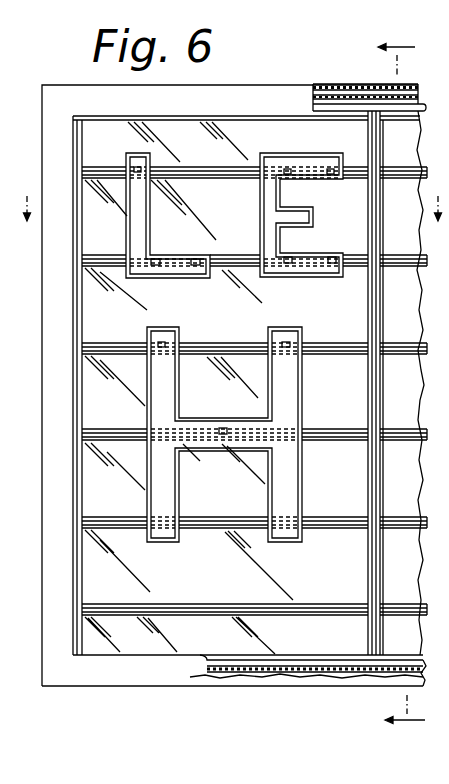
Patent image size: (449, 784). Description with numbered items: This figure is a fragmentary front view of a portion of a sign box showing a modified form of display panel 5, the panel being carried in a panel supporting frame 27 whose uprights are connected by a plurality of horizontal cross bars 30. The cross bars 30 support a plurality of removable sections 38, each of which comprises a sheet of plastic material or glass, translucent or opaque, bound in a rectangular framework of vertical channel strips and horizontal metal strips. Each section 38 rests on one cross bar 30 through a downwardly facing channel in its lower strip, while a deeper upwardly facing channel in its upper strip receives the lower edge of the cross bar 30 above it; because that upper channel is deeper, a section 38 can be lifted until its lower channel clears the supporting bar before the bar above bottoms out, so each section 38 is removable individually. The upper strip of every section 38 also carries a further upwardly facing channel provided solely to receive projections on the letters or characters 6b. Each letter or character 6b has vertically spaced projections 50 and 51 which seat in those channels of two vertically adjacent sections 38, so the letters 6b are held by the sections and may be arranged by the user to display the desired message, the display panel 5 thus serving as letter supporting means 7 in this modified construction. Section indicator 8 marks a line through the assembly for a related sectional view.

The display panel 5 is at (273, 131).
The panel supporting frame 27 is at (368, 133).
The cross bar 30 is at (424, 378).
The removable section 38 is at (90, 380).
The letter or character 6b is at (150, 232).
The projection 50 is at (288, 174).
The projection 51 is at (288, 256).
The letter supporting means 7 is at (401, 385).
The section line 8- 8 is at (233, 223).